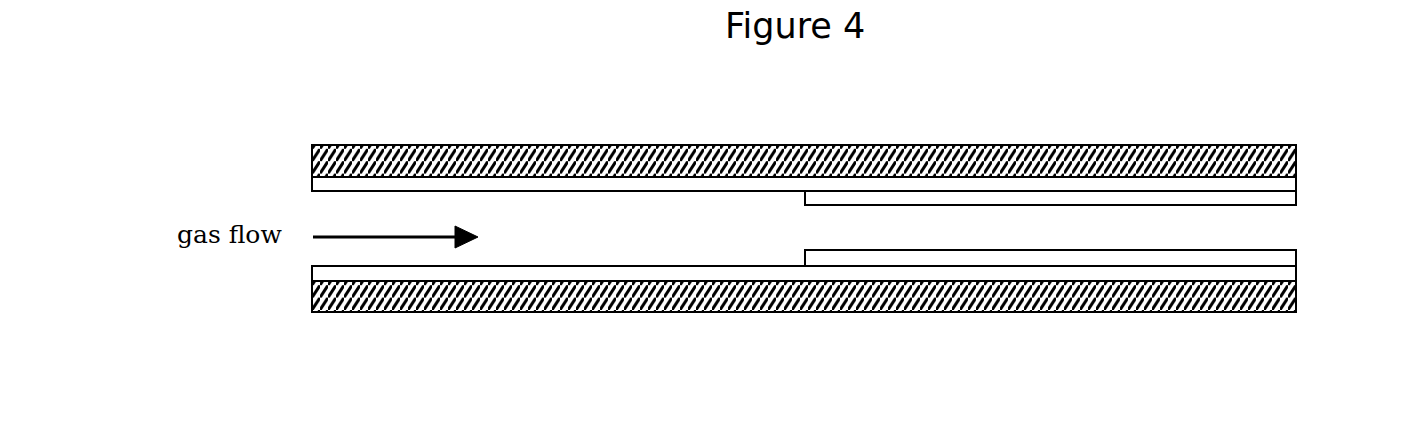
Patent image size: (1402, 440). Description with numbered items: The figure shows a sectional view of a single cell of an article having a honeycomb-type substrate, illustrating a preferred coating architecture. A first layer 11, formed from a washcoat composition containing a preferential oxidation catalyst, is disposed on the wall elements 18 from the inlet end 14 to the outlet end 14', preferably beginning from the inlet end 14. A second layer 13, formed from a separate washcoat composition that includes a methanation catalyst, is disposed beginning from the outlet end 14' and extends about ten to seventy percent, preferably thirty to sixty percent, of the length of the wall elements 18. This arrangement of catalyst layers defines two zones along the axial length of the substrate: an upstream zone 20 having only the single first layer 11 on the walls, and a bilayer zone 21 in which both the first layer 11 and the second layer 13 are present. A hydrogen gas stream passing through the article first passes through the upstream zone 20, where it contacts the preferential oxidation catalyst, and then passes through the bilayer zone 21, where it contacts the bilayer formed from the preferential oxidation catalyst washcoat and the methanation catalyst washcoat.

The first layer 11 is at (502, 278).
The second layer 13 is at (915, 257).
The inlet end 14 is at (754, 299).
The outlet end 14' is at (1091, 271).
The wall elements 18 is at (388, 315).
The upstream zone 20 is at (798, 130).
The bilayer zone 21 is at (1296, 128).